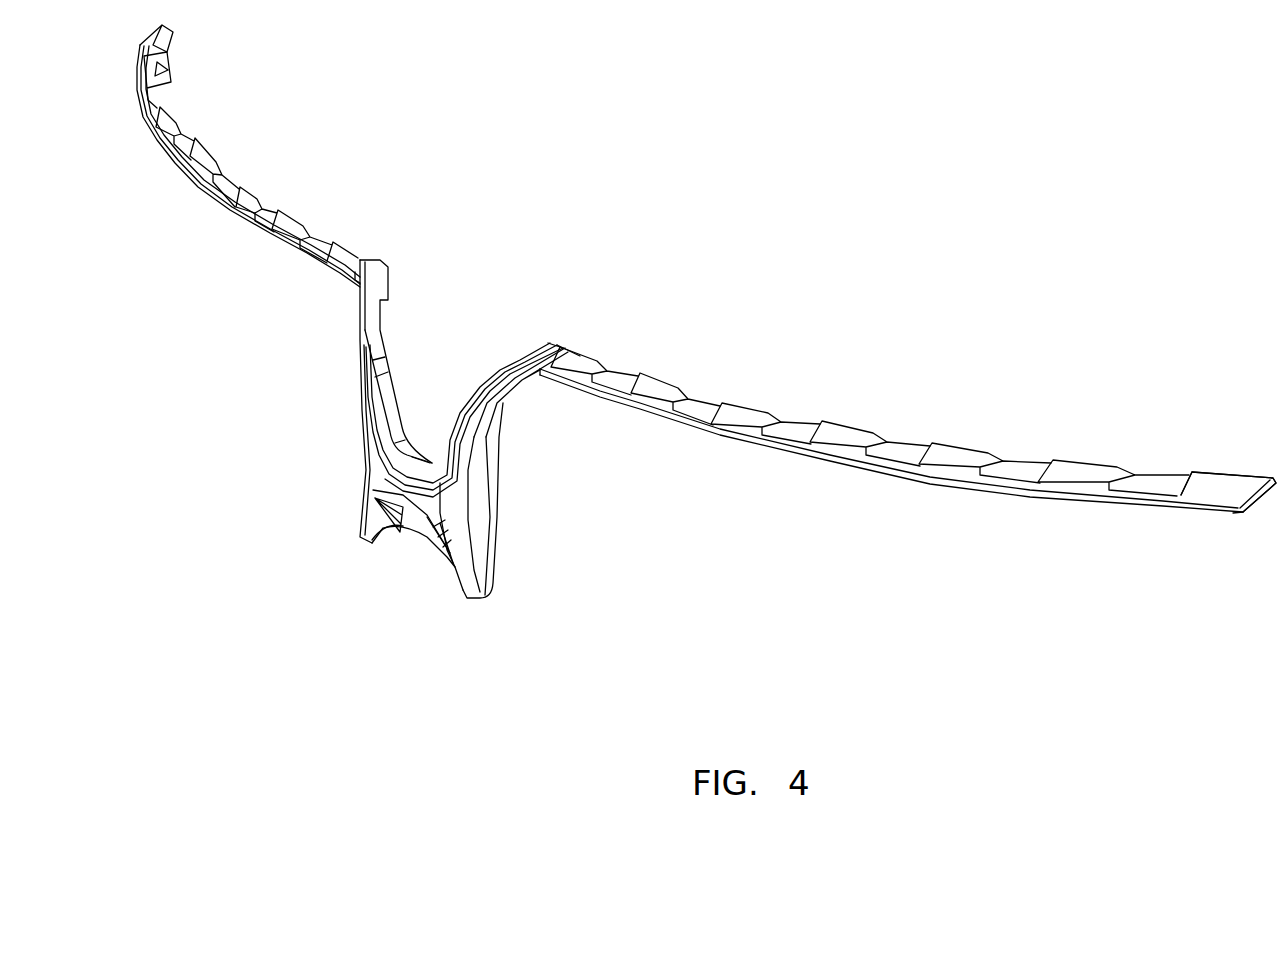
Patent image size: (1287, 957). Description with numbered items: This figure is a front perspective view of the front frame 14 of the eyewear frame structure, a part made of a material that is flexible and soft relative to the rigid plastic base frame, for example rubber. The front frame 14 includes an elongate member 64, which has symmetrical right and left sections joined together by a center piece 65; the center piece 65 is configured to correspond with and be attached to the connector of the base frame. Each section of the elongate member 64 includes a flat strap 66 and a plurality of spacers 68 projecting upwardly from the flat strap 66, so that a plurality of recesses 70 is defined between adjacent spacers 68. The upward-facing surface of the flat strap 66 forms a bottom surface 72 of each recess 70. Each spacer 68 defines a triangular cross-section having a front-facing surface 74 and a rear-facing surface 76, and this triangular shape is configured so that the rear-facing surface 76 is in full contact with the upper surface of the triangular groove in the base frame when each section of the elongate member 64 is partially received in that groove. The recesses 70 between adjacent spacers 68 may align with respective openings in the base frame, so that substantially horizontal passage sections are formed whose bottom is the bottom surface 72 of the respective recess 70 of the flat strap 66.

The front frame 14 is at (876, 289).
The elongate member 64 is at (830, 462).
The center piece 65 is at (370, 447).
The flat strap 66 is at (1022, 463).
The spacers 68 is at (962, 447).
The recesses 70 is at (707, 397).
The bottom surface 72 is at (900, 447).
The front-facing surface 74 is at (725, 420).
The rear-facing surface 76 is at (167, 70).